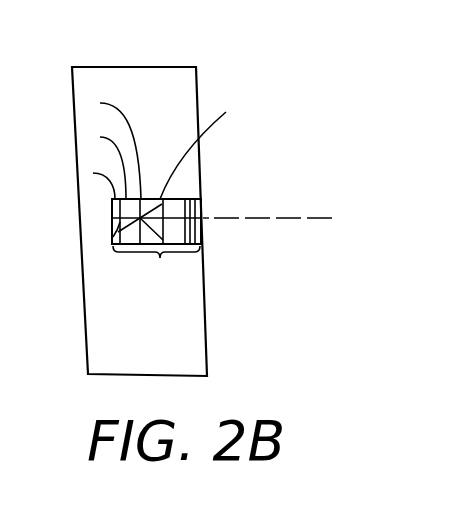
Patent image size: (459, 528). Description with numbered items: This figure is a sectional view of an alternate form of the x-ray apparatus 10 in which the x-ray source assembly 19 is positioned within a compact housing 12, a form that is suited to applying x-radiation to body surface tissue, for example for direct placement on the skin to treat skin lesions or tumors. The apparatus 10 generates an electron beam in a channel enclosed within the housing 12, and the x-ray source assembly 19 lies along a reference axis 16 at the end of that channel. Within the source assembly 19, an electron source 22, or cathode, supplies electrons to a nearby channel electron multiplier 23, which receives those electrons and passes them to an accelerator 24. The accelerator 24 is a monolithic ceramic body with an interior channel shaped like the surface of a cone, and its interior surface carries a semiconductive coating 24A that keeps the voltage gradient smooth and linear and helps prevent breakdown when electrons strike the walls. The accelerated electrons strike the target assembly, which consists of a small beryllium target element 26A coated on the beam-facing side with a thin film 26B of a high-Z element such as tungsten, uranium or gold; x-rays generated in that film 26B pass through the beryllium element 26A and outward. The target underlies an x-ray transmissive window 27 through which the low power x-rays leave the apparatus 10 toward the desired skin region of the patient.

The housing 12 is at (144, 67).
The x-ray apparatus 10 is at (318, 121).
The x-ray transmissive window 27 is at (202, 237).
The high-Z film layer 26B is at (188, 199).
The beryllium target element 26A is at (201, 216).
The electron source 22 is at (93, 173).
The channel electron multiplier 23 is at (100, 137).
The accelerator 24 is at (100, 103).
The semiconductive coating 24A is at (214, 146).
The reference axis 16 is at (297, 220).
The x-ray source assembly 19 is at (186, 275).